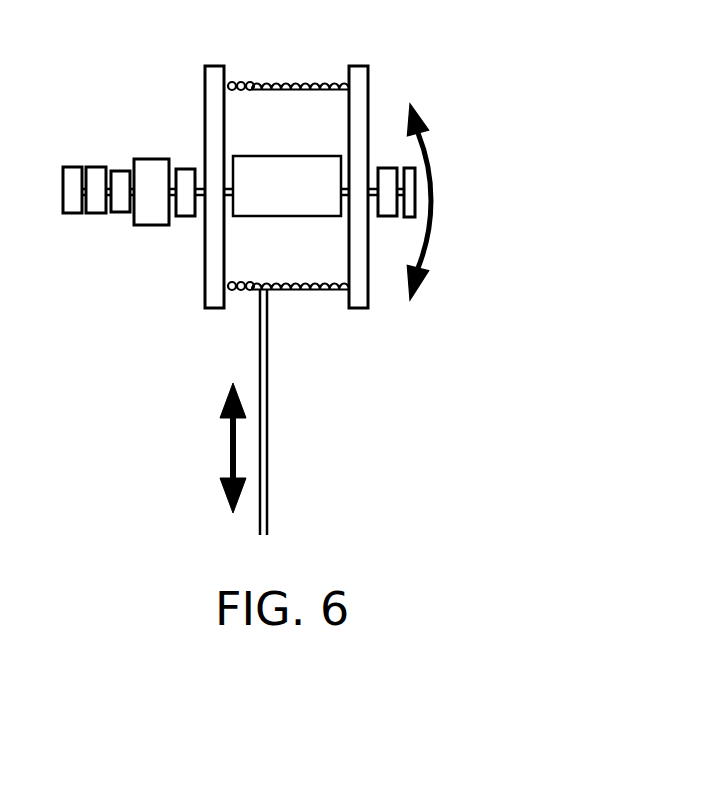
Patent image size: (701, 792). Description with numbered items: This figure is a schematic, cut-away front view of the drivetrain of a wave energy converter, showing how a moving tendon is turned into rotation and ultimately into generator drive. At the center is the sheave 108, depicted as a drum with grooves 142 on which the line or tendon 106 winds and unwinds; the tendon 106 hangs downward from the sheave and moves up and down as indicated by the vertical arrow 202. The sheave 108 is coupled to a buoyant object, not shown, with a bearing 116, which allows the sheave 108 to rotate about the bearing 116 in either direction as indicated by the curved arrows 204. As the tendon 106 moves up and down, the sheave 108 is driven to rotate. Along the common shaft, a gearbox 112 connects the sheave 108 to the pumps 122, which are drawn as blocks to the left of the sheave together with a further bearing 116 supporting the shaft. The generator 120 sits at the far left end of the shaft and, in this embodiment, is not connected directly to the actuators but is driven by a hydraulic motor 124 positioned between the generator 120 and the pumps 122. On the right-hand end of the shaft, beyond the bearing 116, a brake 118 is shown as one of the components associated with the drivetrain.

The tendon line 106 is at (250, 83).
The sheave 108 is at (369, 78).
The gearbox 112 is at (290, 157).
The bearing 116 is at (185, 177).
The brake 118 is at (412, 217).
The generator 120 is at (67, 207).
The pump 122 is at (148, 173).
The hydraulic motor 124 is at (95, 178).
The grooves 142 is at (320, 289).
The arrow 202 is at (230, 458).
The arrows 204 is at (427, 120).